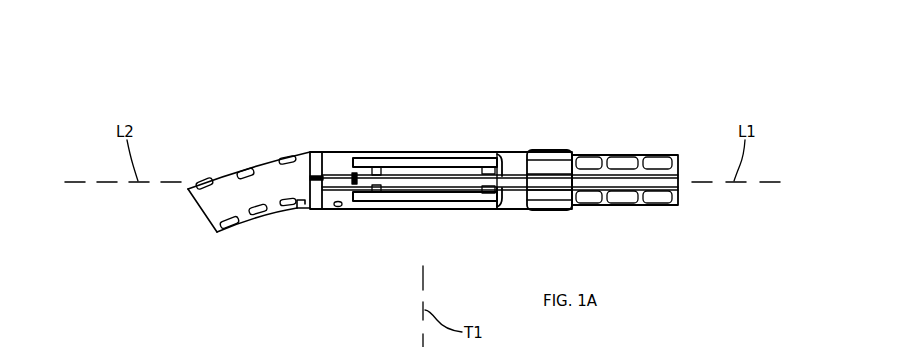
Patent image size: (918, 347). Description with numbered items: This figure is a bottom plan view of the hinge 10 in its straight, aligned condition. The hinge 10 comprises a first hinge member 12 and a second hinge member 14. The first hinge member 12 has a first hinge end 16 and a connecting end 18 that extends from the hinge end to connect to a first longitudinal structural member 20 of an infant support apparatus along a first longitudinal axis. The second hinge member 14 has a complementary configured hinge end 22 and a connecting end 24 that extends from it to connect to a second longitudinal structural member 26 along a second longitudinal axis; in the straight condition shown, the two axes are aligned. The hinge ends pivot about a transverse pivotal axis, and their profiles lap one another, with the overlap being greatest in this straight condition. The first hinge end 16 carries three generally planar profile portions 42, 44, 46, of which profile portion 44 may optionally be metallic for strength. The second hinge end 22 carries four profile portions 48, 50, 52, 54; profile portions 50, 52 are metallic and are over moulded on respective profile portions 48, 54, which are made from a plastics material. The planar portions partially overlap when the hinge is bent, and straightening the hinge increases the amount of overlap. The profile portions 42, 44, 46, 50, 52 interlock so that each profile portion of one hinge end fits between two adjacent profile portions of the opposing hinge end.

The hinge 10 is at (405, 69).
The first hinge member 12 is at (537, 122).
The second hinge member 14 is at (332, 238).
The first hinge end 16 is at (402, 208).
The connecting end 18 is at (507, 210).
The first longitudinal structural member 20 is at (637, 192).
The hinge end 22 is at (411, 153).
The connecting end 24 is at (330, 152).
The second longitudinal structural member 26 is at (258, 178).
The profile portion 42 is at (434, 159).
The profile portion 44 is at (492, 208).
The profile portion 46 is at (372, 204).
The profile portion 48 is at (451, 156).
The profile portion 50 is at (483, 152).
The profile portion 52 is at (444, 204).
The profile portion 54 is at (429, 207).